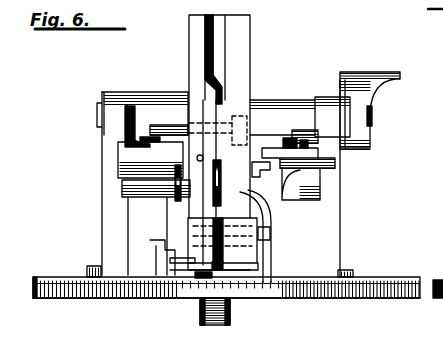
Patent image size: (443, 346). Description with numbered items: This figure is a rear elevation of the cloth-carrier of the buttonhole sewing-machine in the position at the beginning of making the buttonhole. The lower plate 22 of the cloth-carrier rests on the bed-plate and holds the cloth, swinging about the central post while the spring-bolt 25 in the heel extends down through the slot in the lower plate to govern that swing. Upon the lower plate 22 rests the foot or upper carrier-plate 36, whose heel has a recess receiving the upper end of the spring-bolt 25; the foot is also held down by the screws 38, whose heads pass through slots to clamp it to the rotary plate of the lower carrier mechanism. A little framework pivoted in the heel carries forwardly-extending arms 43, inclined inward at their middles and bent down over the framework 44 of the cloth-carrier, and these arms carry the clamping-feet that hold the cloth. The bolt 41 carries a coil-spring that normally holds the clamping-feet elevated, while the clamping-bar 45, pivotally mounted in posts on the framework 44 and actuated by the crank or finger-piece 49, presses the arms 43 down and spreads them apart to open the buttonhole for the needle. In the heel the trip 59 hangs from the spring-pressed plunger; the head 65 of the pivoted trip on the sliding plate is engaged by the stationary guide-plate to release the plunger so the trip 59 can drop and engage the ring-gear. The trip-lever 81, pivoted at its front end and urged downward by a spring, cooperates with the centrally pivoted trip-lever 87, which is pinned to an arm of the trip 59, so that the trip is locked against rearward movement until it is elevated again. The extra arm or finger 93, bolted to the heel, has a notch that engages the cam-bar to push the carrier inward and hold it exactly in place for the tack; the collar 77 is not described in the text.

The lower plate of the cloth-carrier 22 is at (371, 300).
The spring-bolt 25 is at (232, 312).
The foot or upper carrier-plate 36 is at (303, 278).
The screws 38 is at (100, 268).
The bolt 41 is at (372, 118).
The forwardly-extending arms 43 is at (133, 145).
The framework of the cloth-carrier 44 is at (110, 142).
The clamping-bar 45 is at (270, 110).
The crank or finger-piece 49 is at (365, 75).
The trip 59 is at (218, 215).
The head of the trip 65 is at (152, 262).
The collar 77 is at (325, 168).
The trip-lever 81 is at (222, 28).
The trip-lever 87 is at (210, 90).
The extra arm or finger 93 is at (180, 224).